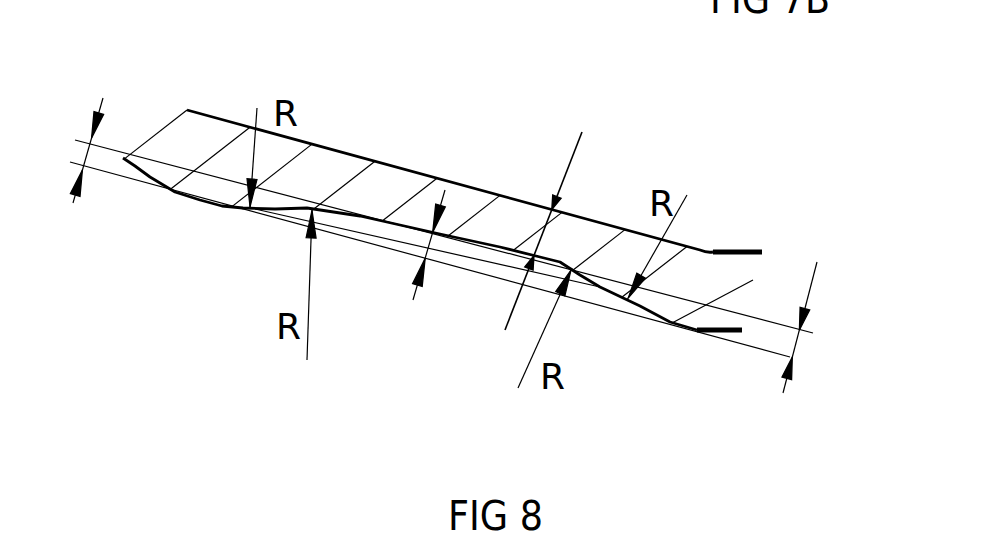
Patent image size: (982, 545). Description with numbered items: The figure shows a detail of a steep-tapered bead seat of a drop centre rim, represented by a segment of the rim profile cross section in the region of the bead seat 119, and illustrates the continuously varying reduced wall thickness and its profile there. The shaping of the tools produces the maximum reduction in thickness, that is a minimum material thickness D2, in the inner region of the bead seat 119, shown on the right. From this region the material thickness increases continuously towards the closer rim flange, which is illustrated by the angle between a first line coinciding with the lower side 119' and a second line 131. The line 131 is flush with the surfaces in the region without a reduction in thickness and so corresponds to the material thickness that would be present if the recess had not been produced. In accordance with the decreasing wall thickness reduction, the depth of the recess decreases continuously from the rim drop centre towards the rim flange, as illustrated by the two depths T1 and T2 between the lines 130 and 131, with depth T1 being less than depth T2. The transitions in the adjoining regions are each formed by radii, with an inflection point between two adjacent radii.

The bead seat 119 is at (443, 173).
The lower side 119' is at (410, 319).
The line 130 is at (107, 145).
The line 131 is at (495, 277).
The depth T1 is at (66, 176).
The depth T2 is at (822, 327).
The minimum material thickness D2 is at (561, 231).